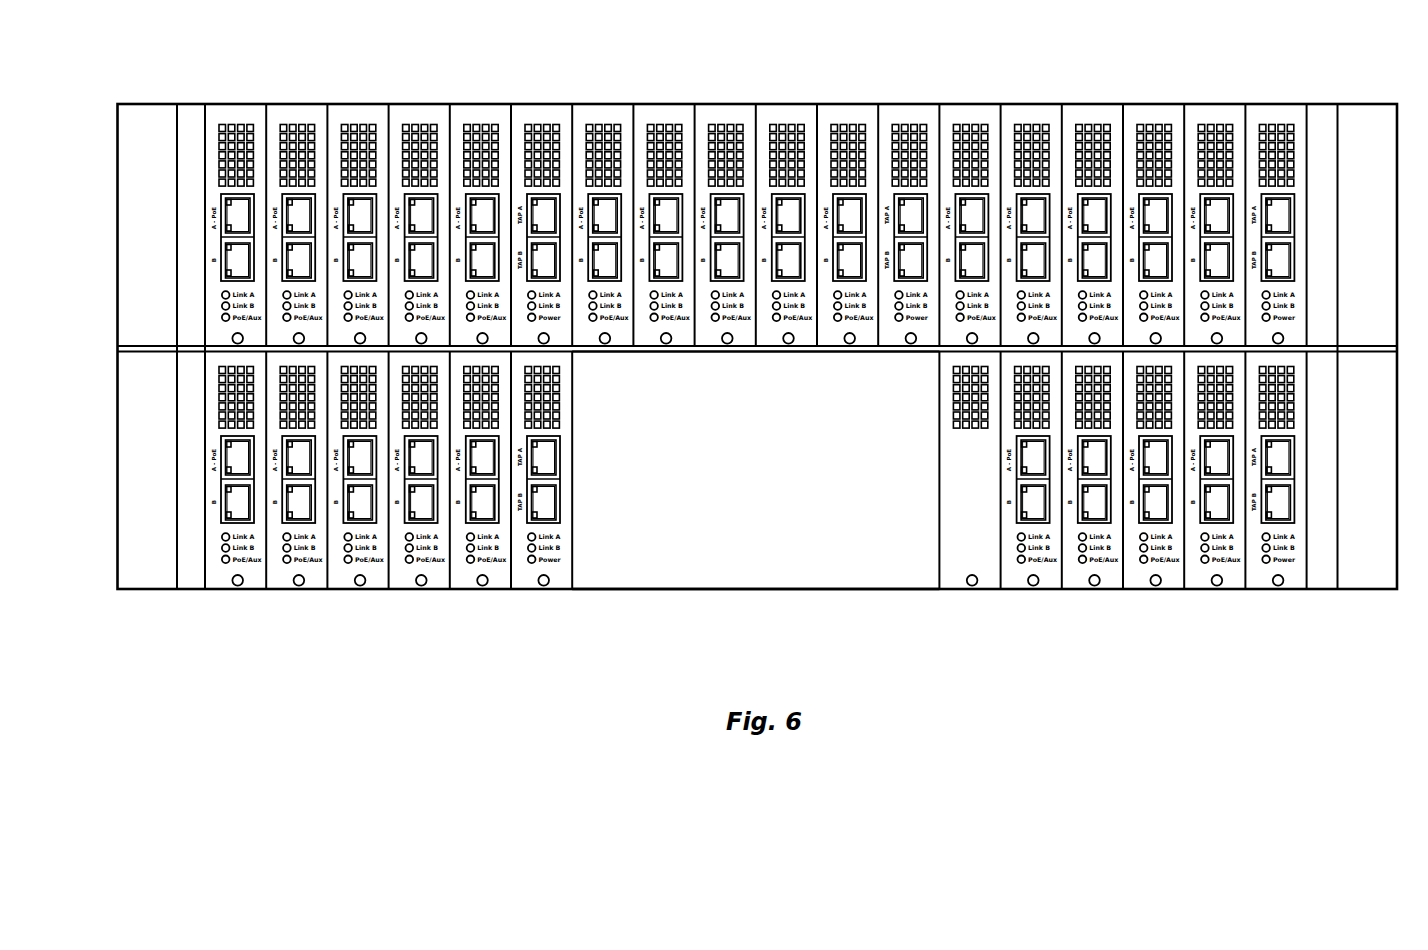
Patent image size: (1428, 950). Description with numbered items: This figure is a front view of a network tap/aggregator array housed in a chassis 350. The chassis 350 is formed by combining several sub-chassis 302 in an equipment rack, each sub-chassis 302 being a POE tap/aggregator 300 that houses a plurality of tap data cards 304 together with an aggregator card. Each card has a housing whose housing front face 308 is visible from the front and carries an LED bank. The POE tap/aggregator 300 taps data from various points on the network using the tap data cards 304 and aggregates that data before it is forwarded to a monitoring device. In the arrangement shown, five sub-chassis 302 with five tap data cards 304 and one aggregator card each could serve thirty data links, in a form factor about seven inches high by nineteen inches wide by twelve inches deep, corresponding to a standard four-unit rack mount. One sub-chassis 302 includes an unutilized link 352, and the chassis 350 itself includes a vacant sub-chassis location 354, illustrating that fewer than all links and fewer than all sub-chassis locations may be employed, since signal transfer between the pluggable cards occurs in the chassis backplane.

The POE tap/aggregator 300 is at (203, 478).
The sub-chassis 302 is at (205, 239).
The tap data card 304 is at (297, 113).
The housing front face 308 is at (546, 113).
The chassis 350 is at (1411, 128).
The unutilized link 352 is at (972, 586).
The vacant sub-chassis location 354 is at (766, 555).